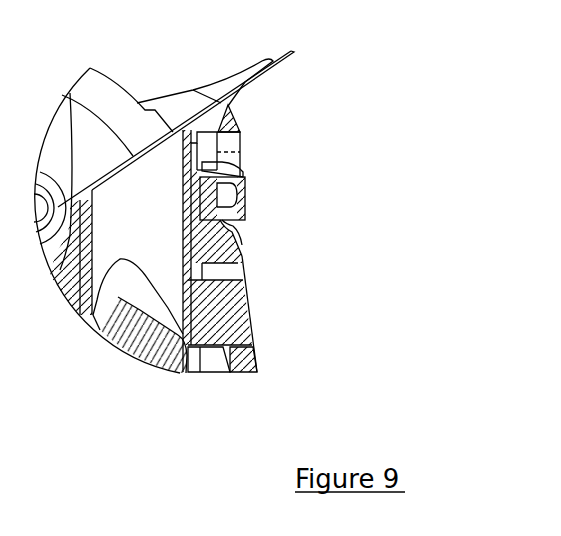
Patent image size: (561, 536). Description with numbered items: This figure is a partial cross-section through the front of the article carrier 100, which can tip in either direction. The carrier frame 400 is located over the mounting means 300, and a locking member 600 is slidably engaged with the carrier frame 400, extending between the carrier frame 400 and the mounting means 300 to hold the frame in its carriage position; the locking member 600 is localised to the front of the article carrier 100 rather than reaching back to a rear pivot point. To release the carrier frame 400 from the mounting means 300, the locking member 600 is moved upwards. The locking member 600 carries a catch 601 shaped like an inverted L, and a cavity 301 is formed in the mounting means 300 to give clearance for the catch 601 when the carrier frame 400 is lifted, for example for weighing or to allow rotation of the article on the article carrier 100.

The article carrier 100 is at (338, 87).
The carrier frame 400 is at (143, 88).
The mounting means 300 is at (264, 318).
The cavity 301 is at (229, 233).
The locking member 600 is at (245, 177).
The catch 601 is at (239, 203).